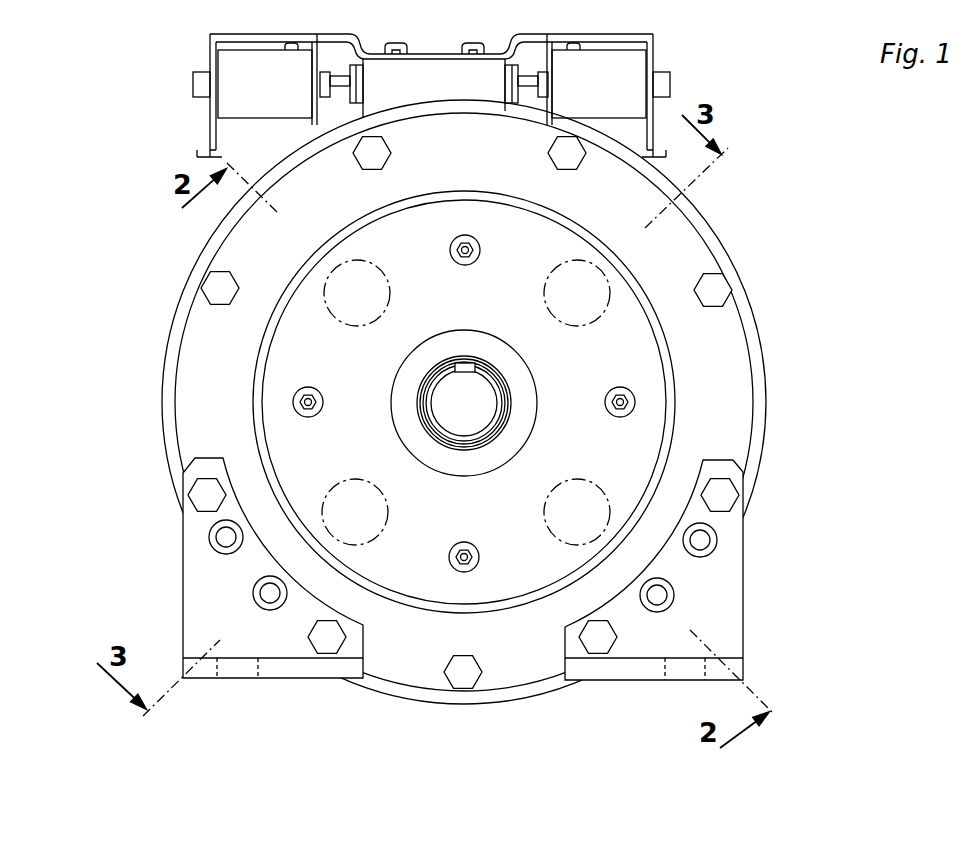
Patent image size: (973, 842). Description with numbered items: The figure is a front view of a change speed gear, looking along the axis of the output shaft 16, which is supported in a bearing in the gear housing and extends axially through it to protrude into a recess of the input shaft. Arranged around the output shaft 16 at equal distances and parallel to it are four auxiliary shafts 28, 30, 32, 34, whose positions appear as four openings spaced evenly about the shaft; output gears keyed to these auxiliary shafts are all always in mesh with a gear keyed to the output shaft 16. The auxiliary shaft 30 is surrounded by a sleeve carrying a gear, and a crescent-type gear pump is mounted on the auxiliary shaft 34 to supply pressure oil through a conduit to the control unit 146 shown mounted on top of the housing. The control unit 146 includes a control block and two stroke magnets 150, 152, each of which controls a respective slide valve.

The output shaft 16 is at (464, 403).
The auxiliary shaft 28 is at (355, 295).
The auxiliary shaft 30 is at (578, 510).
The auxiliary shaft 32 is at (355, 515).
The auxiliary shaft 34 is at (580, 292).
The control unit 146 is at (452, 44).
The stroke magnet 150 is at (600, 80).
The stroke magnet 152 is at (265, 93).